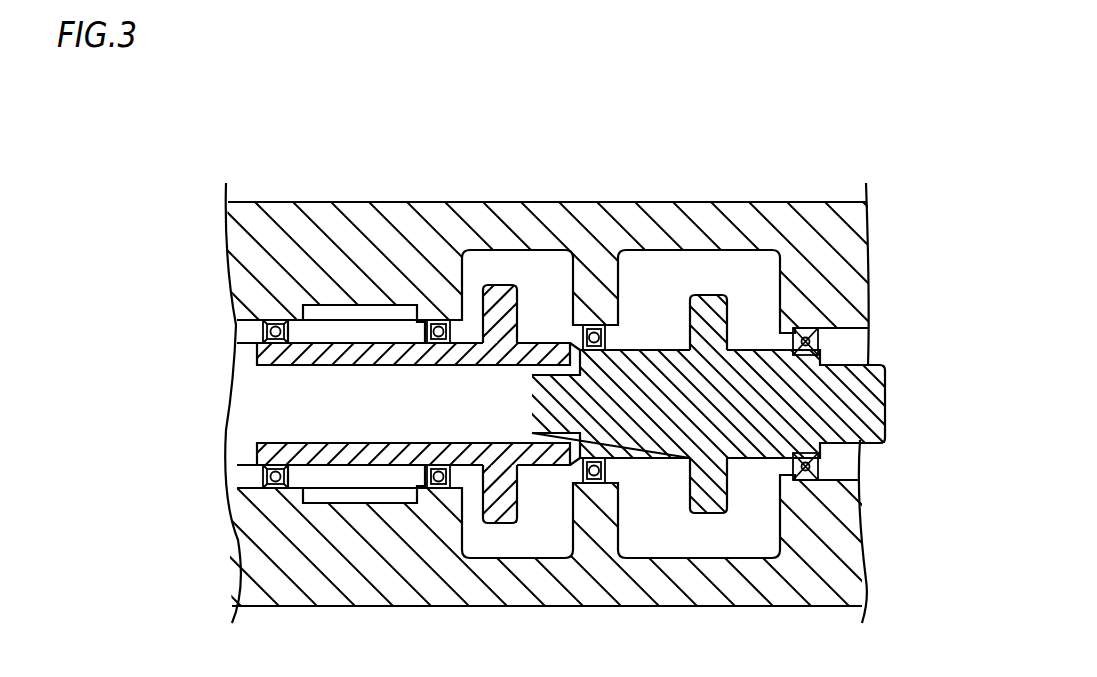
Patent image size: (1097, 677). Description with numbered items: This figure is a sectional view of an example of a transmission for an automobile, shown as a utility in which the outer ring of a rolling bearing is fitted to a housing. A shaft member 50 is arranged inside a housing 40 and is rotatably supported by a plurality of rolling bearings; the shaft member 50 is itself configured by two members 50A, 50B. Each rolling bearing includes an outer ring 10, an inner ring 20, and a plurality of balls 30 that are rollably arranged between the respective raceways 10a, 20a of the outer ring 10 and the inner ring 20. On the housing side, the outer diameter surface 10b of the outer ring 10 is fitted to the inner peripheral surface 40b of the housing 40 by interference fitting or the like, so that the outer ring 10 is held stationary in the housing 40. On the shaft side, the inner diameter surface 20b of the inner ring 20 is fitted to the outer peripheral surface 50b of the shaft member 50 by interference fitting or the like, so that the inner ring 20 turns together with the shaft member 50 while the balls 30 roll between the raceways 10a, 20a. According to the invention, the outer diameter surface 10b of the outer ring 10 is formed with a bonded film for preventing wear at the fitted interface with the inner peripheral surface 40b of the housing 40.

The outer ring 10 is at (262, 320).
The raceway 10a is at (302, 320).
The outer diameter surface 10b is at (290, 502).
The inner ring 20 is at (226, 404).
The raceway 20a is at (266, 332).
The inner diameter surface 20b is at (265, 467).
The balls 30 is at (262, 320).
The housing 40 is at (603, 590).
The inner peripheral surface 40b is at (265, 477).
The shaft member 50 is at (580, 317).
The first member of shaft member 50A is at (498, 292).
The second member of shaft member 50B is at (712, 313).
The outer peripheral surface 50b is at (292, 478).